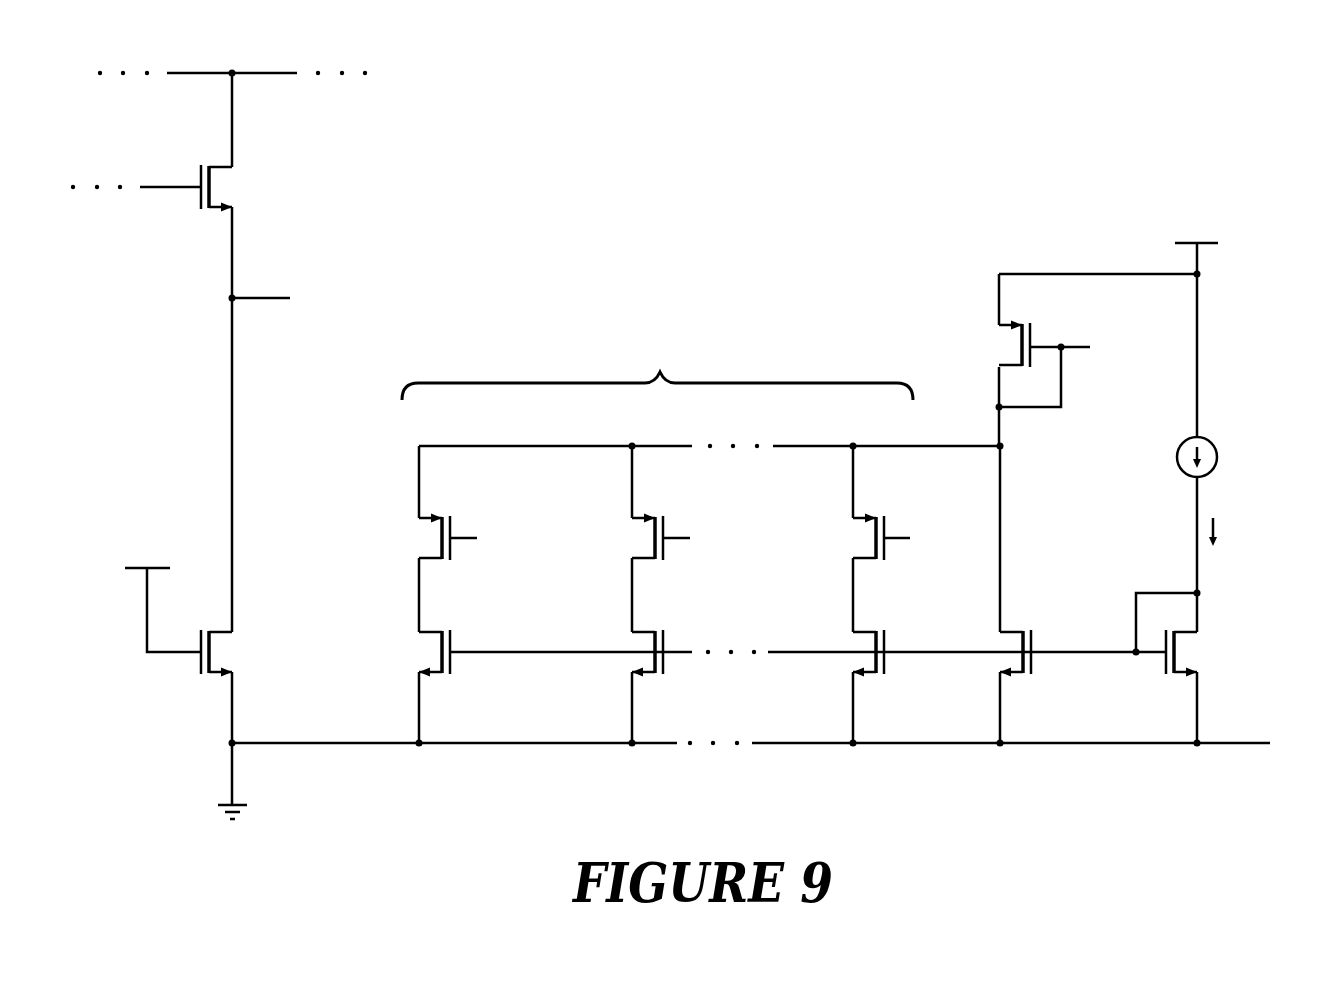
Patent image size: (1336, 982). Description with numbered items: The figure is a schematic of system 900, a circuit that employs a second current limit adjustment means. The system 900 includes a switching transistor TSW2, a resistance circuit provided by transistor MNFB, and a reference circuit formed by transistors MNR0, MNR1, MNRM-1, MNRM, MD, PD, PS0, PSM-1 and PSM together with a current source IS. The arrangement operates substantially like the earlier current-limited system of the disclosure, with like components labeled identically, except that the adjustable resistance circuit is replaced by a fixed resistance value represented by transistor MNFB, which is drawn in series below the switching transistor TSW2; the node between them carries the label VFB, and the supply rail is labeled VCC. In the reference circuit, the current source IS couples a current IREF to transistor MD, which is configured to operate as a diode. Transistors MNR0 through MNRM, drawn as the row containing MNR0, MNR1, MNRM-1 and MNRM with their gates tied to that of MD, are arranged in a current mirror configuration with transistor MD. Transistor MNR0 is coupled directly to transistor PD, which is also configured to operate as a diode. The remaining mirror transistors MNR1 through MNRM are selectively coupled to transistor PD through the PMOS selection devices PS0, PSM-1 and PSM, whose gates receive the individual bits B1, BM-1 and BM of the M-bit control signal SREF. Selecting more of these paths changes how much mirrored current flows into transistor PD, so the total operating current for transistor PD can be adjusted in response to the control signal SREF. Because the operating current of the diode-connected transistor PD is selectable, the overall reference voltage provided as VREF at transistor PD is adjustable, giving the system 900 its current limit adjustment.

The system 900 is at (703, 444).
The switching transistor TSW2 is at (191, 188).
The feedback voltage node VFB is at (288, 298).
The supply voltage VCC is at (686, 422).
The resistance circuit transistor MNFB is at (260, 653).
The control signal SREF is at (784, 544).
The selection transistor PSM is at (413, 537).
The control signal bit BM is at (488, 538).
The selection transistor PSM-1 is at (620, 537).
The control signal bit BM-1 is at (712, 538).
The selection transistor PS0 is at (849, 537).
The control signal bit B1 is at (917, 538).
The current mirror transistor MNRM is at (402, 653).
The current mirror transistor MNRM-1 is at (605, 649).
The current mirror transistor MNR1 is at (832, 649).
The current mirror transistor MNR0 is at (980, 649).
The diode-connected transistor PD is at (999, 344).
The reference voltage VREF is at (1087, 367).
The current source IS is at (1222, 459).
The reference current IREF is at (1252, 533).
The diode-connected transistor MD is at (1189, 633).